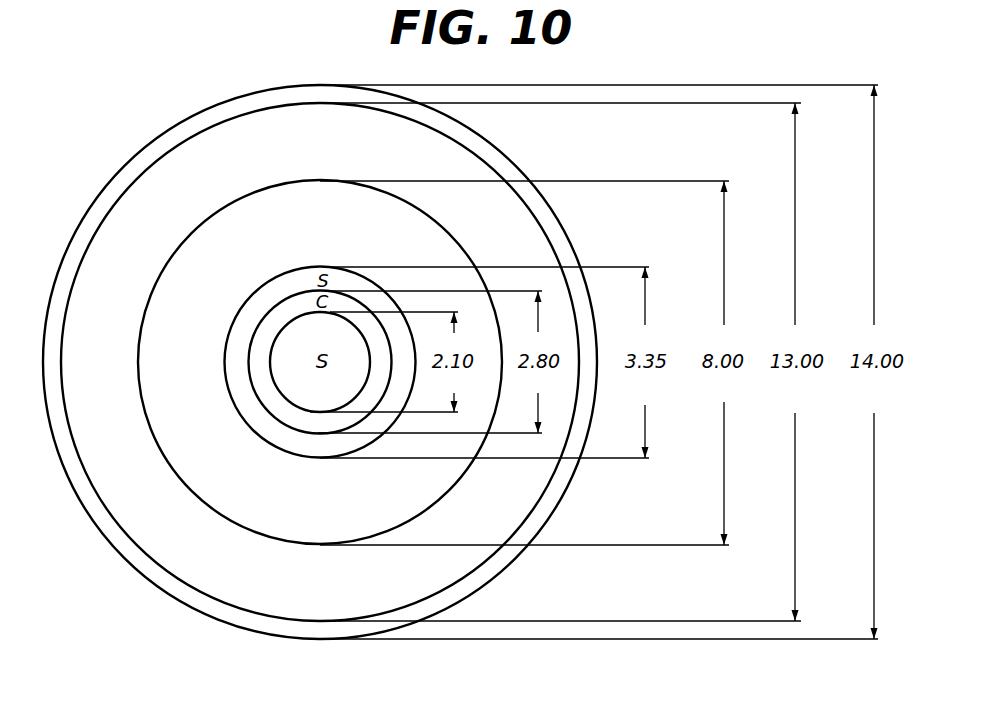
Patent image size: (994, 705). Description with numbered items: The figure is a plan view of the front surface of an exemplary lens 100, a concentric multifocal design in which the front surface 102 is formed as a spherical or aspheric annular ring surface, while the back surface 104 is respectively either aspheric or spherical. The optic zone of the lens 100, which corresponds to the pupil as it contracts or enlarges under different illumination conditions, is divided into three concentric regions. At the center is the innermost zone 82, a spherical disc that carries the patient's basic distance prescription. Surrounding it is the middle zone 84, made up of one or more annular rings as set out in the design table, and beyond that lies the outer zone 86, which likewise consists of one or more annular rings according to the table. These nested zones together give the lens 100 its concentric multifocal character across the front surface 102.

The lens 100 is at (126, 122).
The annular ring front surface 102 is at (116, 238).
The back surface 104 is at (541, 158).
The outer zone 86 is at (172, 366).
The middle zone 84 is at (270, 377).
The innermost zone 82 is at (313, 414).